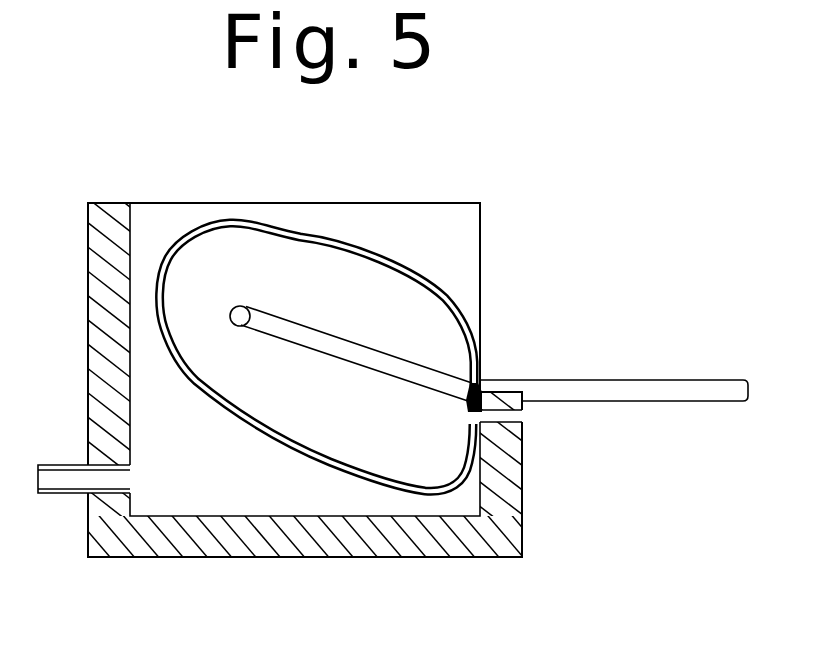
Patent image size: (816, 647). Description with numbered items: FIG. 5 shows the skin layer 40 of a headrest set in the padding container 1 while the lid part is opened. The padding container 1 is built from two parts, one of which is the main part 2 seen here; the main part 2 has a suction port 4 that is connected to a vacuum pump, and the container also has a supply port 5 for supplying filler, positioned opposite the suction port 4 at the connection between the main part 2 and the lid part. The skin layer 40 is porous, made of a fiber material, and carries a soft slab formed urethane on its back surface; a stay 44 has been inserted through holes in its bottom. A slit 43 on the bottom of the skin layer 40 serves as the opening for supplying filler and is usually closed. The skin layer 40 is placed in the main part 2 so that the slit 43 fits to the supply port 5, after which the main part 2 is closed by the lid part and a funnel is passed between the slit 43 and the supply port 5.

The padding container 1 is at (305, 184).
The main part 2 is at (344, 547).
The suction port 4 is at (62, 480).
The supply port 5 is at (500, 420).
The skin layer 40 is at (387, 254).
The slit 43 is at (475, 389).
The stay 44 is at (660, 392).